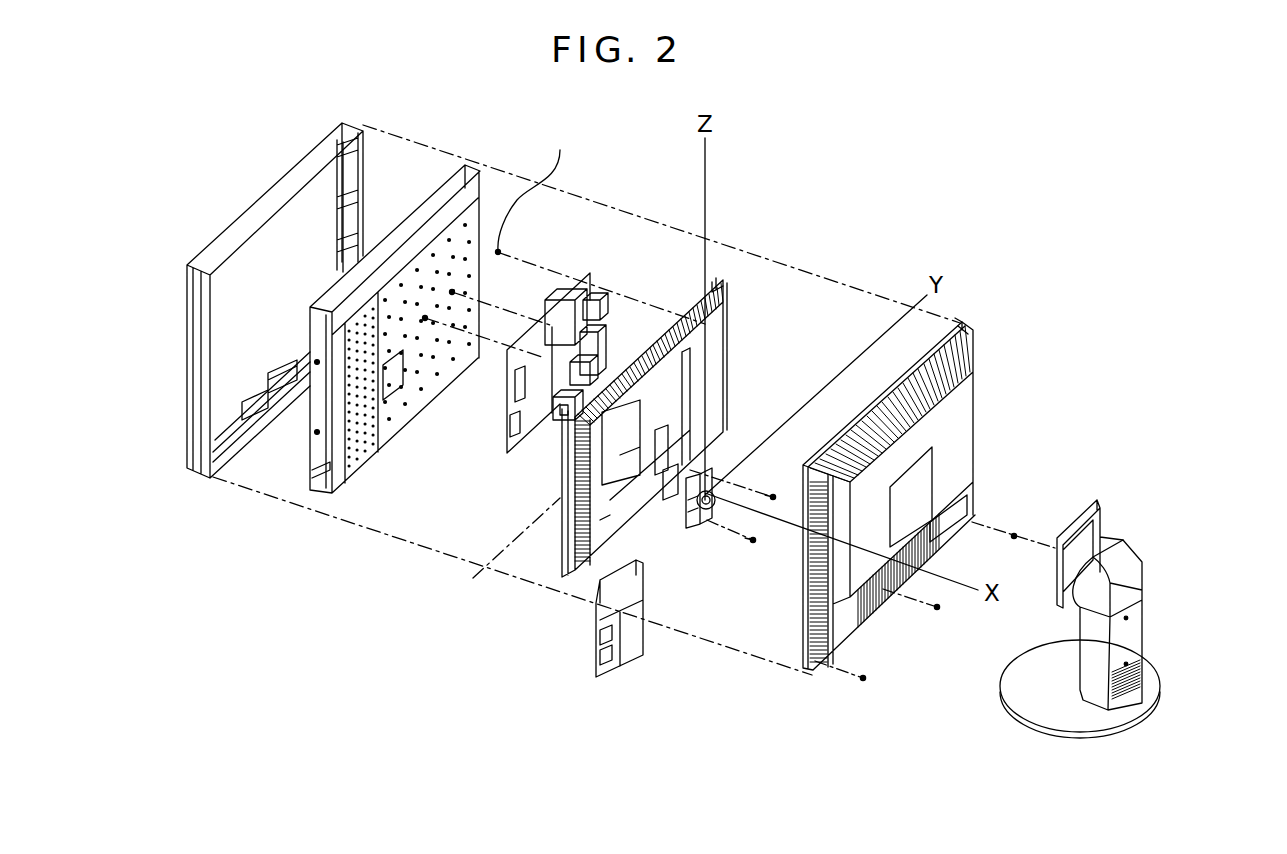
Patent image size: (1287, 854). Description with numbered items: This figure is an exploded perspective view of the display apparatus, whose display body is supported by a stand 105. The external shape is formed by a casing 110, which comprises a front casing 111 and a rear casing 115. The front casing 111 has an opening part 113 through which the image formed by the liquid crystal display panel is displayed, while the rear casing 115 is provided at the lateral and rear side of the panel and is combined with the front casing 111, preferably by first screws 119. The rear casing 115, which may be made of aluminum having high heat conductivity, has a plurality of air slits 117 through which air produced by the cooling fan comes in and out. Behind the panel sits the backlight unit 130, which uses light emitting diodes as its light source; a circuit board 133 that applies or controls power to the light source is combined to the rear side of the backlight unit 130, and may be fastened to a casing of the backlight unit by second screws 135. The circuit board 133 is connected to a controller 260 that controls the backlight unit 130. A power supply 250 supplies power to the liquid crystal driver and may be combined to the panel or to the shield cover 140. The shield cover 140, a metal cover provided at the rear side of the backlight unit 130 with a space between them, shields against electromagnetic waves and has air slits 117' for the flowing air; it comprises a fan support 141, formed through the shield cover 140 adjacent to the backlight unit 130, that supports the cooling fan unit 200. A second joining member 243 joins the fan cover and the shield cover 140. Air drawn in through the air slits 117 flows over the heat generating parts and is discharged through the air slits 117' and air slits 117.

The stand 105 is at (1152, 688).
The casing 110 is at (768, 748).
The front casing 111 is at (203, 470).
The opening part 113 is at (337, 172).
The rear casing 115 is at (807, 677).
The air slits 117 is at (978, 298).
The air slits 117' is at (764, 246).
The first screws 119 is at (930, 663).
The backlight unit 130 is at (467, 165).
The circuit board 133 is at (587, 280).
The second screws 135 is at (500, 350).
The shield cover 140 is at (705, 265).
The fan support 141 is at (675, 483).
The cooling fan unit 200 is at (707, 503).
The second joining member 243 is at (773, 497).
The power supply 250 is at (327, 493).
The controller 260 is at (370, 457).